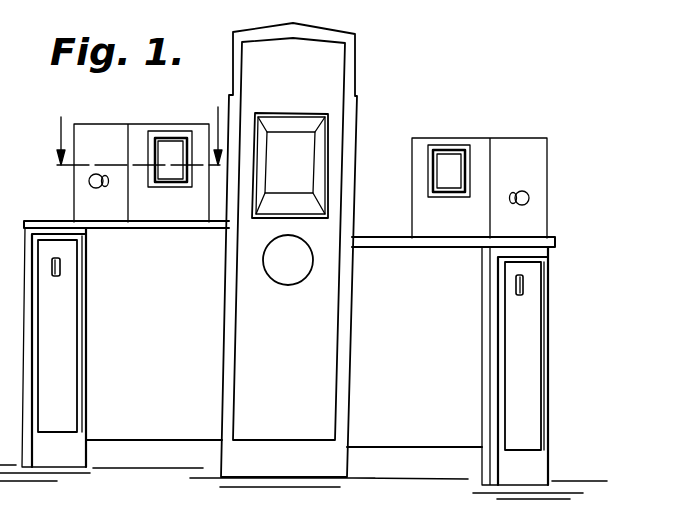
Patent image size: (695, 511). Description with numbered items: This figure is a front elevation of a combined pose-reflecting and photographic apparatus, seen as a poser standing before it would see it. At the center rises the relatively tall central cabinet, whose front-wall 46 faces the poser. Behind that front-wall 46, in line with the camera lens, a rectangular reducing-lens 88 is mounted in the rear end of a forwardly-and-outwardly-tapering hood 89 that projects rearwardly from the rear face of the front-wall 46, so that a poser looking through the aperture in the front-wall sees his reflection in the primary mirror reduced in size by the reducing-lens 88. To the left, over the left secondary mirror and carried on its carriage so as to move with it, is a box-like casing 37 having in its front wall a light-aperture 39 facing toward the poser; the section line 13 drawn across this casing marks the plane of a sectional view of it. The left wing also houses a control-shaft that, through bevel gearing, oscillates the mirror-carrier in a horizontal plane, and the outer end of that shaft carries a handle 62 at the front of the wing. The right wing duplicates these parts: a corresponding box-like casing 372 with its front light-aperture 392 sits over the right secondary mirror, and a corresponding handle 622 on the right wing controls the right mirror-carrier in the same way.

The section line 13- 13 is at (137, 131).
The box-like casing 37 is at (138, 132).
The light-aperture 39 is at (161, 181).
The front-wall 46 is at (289, 250).
The handle 62 is at (59, 273).
The reducing-lens 88 is at (290, 162).
The hood 89 is at (317, 188).
The box-like casing of right wing 372 is at (533, 214).
The light-aperture of right wing 392 is at (440, 190).
The handle of right wing 622 is at (517, 285).